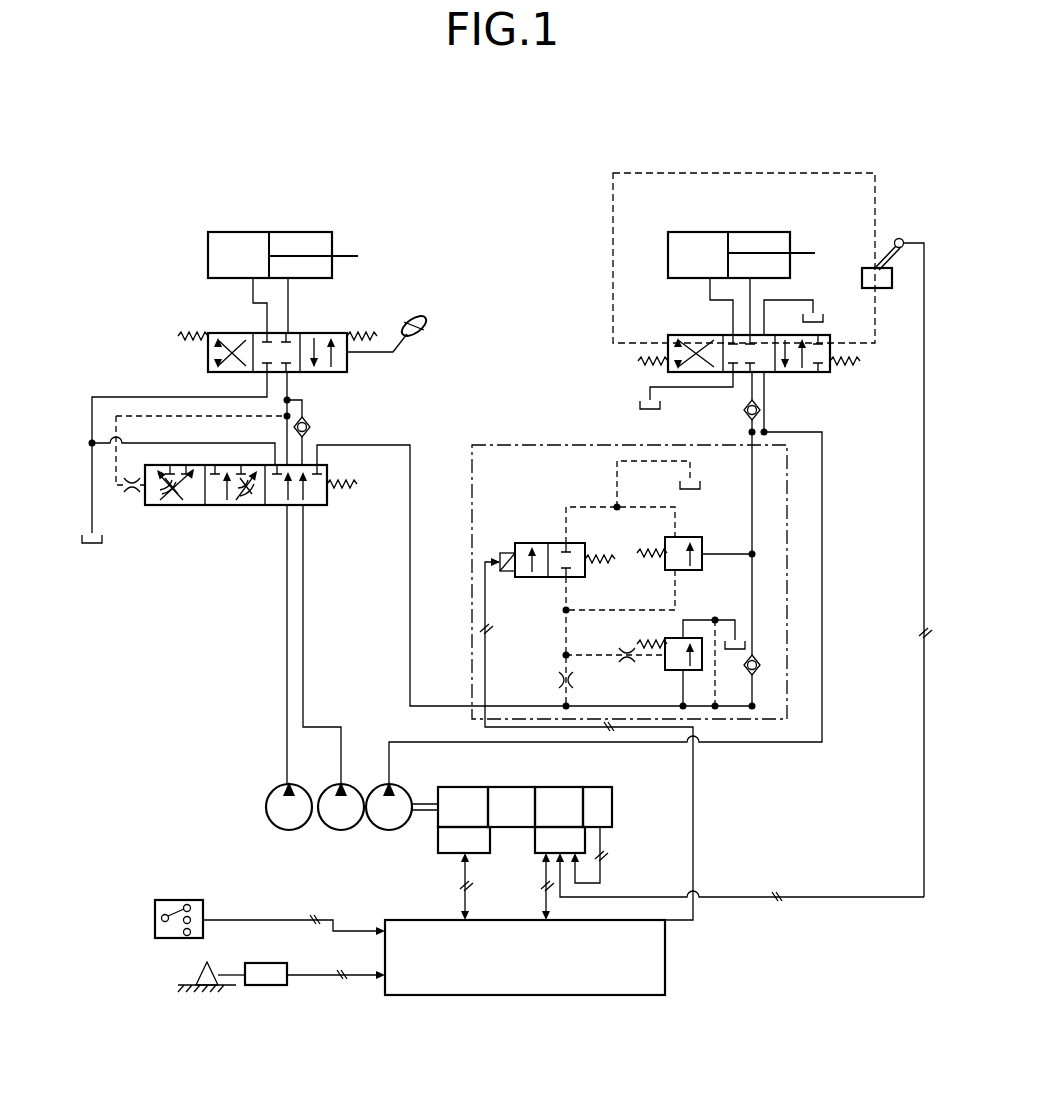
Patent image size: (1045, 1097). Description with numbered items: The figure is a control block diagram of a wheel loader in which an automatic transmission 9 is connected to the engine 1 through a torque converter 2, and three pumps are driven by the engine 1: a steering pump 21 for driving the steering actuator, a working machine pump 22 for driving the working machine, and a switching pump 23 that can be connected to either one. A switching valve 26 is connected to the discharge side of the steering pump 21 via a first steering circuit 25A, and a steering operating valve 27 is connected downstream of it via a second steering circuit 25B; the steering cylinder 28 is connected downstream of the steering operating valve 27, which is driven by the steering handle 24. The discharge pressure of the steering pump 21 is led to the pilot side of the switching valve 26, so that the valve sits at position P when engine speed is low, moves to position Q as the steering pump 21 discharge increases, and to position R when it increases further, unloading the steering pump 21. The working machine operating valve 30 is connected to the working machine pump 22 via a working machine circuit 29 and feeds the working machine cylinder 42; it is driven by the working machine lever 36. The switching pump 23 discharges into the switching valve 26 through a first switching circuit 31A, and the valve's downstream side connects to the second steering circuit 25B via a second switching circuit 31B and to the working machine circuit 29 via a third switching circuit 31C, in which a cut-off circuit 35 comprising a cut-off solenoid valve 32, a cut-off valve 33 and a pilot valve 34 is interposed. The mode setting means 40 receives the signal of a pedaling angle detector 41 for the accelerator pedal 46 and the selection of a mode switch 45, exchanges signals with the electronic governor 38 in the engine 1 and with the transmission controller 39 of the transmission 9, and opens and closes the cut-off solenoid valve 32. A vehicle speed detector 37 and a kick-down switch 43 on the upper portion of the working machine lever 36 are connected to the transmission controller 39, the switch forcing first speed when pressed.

The engine 1 is at (466, 786).
The torque converter 2 is at (514, 786).
The automatic transmission 9 is at (562, 786).
The steering pump 21 is at (276, 829).
The working machine pump 22 is at (385, 829).
The switching pump 23 is at (335, 829).
The steering handle 24 is at (430, 322).
The first steering circuit 25A is at (287, 712).
The second steering circuit 25B is at (290, 388).
The switching valve 26 is at (148, 505).
The steering operating valve 27 is at (350, 366).
The steering cylinder 28 is at (300, 232).
The working machine circuit 29 is at (389, 742).
The working machine operating valve 30 is at (830, 372).
The first switching circuit 31A is at (305, 628).
The second switching circuit 31B is at (318, 434).
The third switching circuit 31C is at (410, 617).
The cut-off solenoid valve 32 is at (531, 543).
The cut-off valve 33 is at (665, 662).
The pilot valve 34 is at (703, 567).
The cut-off circuit 35 is at (508, 445).
The working machine lever 36 is at (876, 264).
The vehicle speed detector 37 is at (612, 812).
The electronic governor 38 is at (438, 853).
The transmission controller 39 is at (535, 848).
The mode setting means 40 is at (550, 996).
The pedaling angle detector 41 is at (265, 986).
The working machine cylinder 42 is at (704, 232).
The kick-down switch 43 is at (899, 238).
The mode switch 45 is at (155, 938).
The accelerator pedal 46 is at (213, 958).